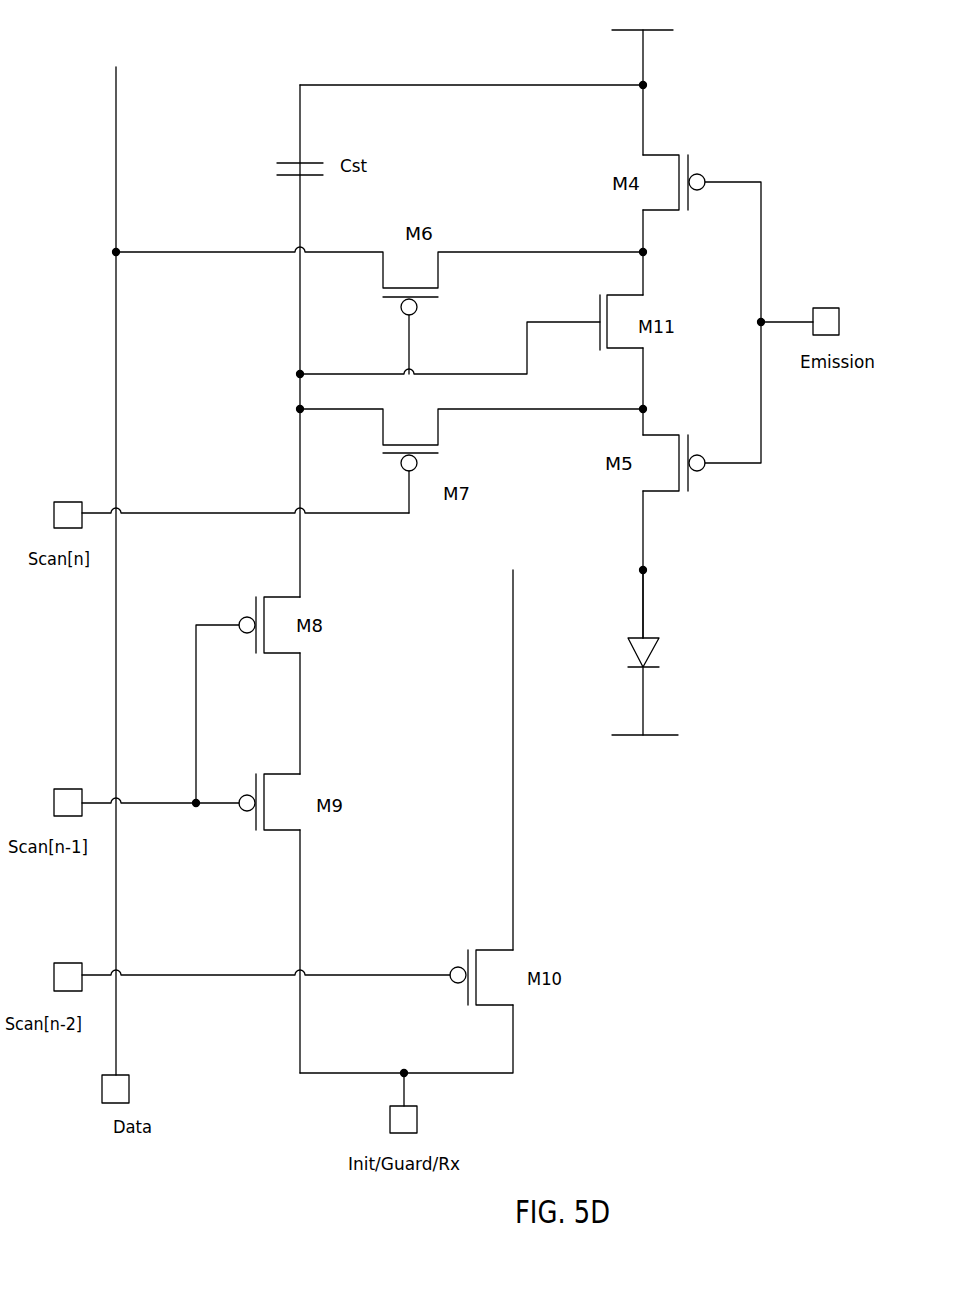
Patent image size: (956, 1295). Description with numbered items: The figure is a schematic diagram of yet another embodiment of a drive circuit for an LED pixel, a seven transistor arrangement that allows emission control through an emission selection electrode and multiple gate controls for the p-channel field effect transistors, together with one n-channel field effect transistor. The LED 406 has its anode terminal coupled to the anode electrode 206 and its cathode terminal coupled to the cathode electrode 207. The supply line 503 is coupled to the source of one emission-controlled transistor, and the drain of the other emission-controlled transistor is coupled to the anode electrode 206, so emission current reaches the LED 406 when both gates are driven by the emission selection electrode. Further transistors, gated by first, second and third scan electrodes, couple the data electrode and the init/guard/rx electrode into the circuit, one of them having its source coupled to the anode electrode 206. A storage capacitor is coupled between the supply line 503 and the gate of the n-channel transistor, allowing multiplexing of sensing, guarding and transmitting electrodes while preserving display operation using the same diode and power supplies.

The supply line 503 is at (646, 46).
The LED 406 is at (628, 638).
The anode electrode 206 is at (645, 600).
The cathode electrode 207 is at (620, 733).